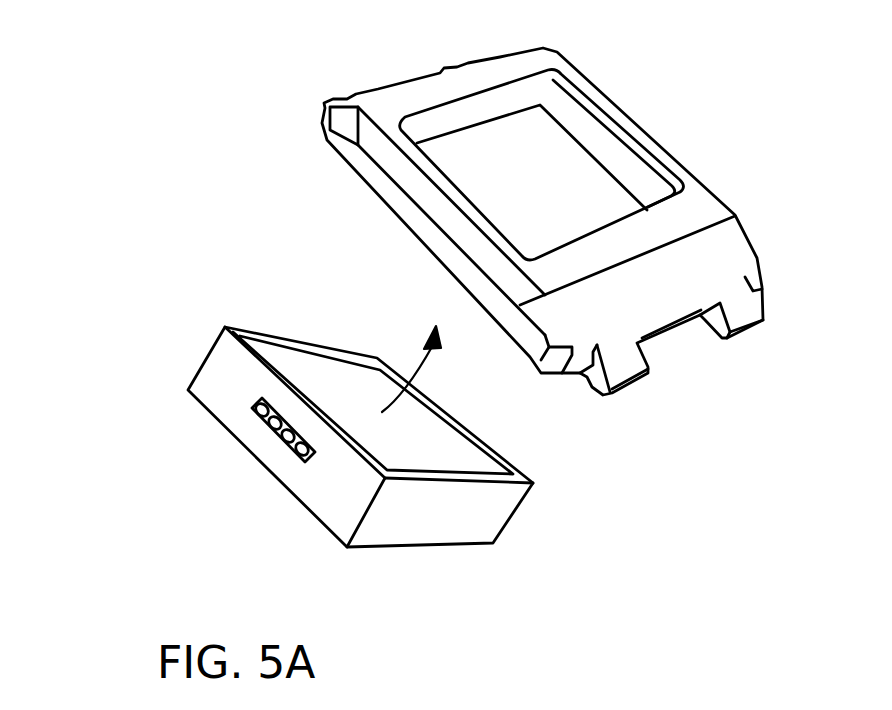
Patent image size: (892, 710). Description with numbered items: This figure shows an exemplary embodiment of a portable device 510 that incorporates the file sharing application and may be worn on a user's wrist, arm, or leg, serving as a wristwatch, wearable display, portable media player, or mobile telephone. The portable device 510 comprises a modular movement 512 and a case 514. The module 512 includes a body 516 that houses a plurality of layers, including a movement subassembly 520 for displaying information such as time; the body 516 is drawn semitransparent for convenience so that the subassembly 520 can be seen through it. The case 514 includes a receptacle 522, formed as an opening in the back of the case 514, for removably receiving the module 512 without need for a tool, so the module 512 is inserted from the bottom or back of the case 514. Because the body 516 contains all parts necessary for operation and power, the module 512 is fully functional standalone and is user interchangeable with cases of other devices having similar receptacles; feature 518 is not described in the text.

The portable device 510 is at (101, 97).
The modular movement 512 is at (215, 387).
The case 514 is at (683, 243).
The body 516 is at (277, 482).
The cover 518 is at (362, 368).
The movement subassembly 520 is at (417, 498).
The receptacle 522 is at (447, 128).